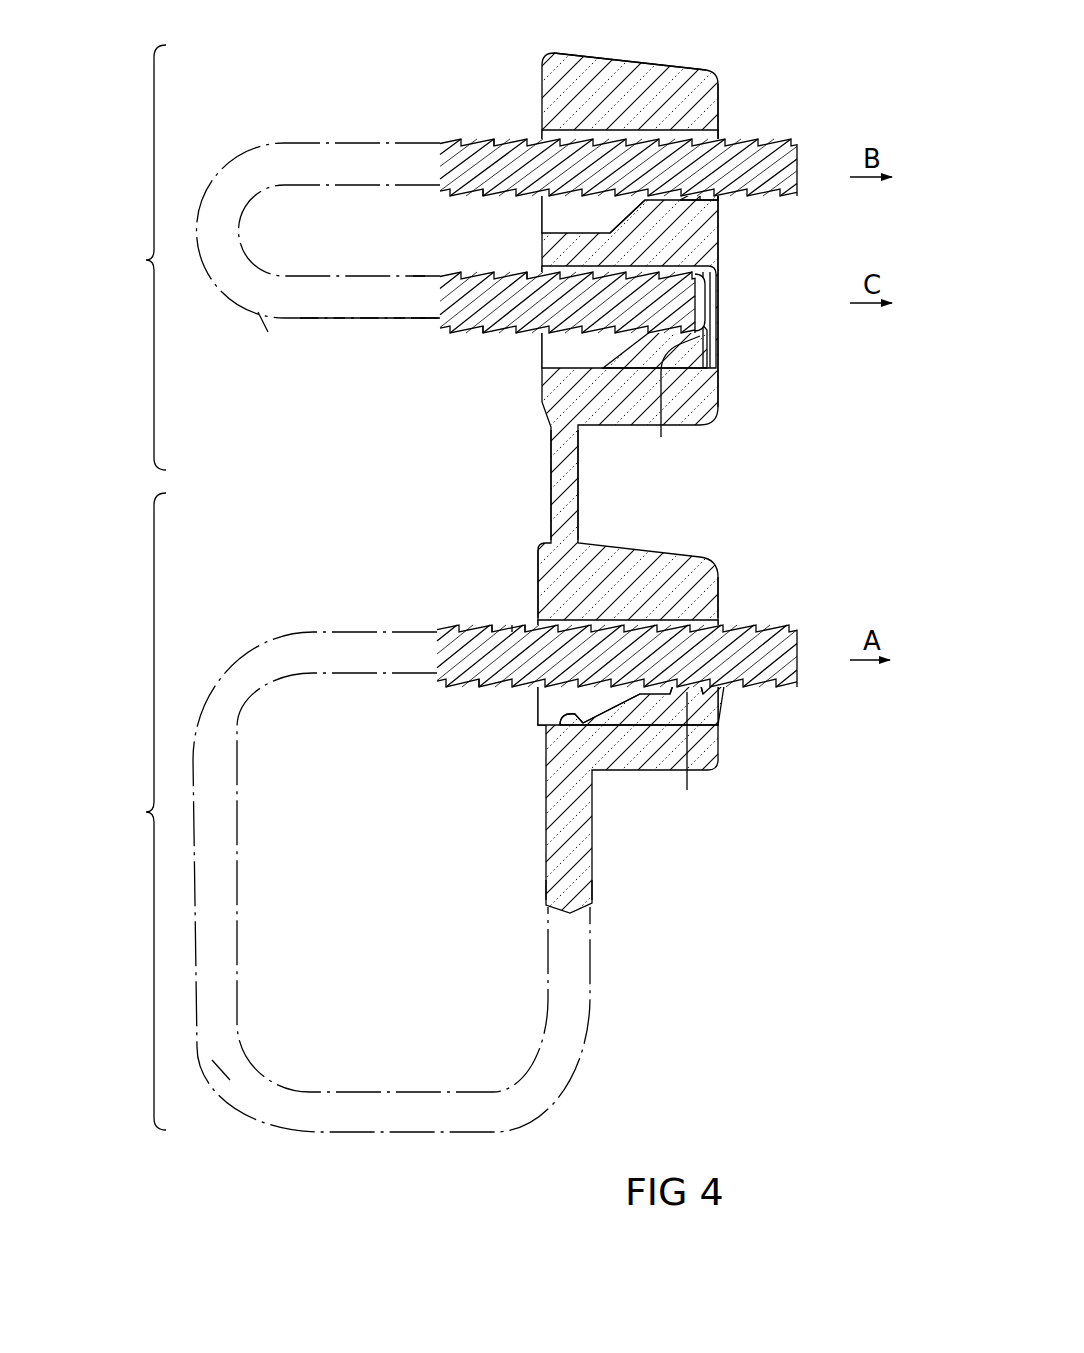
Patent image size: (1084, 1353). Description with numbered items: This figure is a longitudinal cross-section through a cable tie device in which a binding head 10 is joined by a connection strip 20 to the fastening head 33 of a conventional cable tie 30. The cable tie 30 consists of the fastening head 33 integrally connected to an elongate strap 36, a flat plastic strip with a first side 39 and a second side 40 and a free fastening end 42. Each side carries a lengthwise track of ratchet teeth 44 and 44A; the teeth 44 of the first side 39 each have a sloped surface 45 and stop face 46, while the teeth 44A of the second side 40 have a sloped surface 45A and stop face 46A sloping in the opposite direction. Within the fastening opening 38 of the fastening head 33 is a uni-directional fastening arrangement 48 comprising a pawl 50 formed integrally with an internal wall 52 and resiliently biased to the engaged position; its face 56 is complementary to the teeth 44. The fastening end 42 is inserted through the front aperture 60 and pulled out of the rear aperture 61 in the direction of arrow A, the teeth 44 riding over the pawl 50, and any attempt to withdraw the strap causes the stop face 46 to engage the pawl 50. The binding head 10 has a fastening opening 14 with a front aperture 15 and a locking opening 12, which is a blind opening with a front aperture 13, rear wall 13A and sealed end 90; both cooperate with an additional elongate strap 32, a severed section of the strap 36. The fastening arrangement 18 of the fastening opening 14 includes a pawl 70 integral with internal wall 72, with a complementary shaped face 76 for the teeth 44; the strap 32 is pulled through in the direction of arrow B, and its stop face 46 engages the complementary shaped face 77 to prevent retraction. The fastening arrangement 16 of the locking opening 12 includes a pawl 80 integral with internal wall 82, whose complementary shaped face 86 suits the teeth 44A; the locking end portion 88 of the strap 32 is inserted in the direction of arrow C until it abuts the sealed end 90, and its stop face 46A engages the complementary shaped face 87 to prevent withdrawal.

The binding head 10 is at (136, 257).
The locking opening 12 is at (316, 238).
The front aperture 13 is at (556, 362).
The rear wall 13A is at (719, 310).
The fastening opening 14 is at (322, 122).
The front aperture 15 is at (566, 126).
The fastening arrangement 16 is at (404, 385).
The fastening arrangement 18 is at (386, 227).
The connection strip 20 is at (567, 463).
The cable tie 30 is at (136, 811).
The additional elongate strap 32 is at (268, 314).
The fastening head 33 is at (658, 570).
The elongate strap 36 is at (232, 1060).
The fastening opening 38 is at (318, 602).
The first side 39 is at (410, 269).
The second side 40 is at (410, 329).
The fastening end 42 is at (780, 650).
The ratchet teeth 44 is at (530, 197).
The ratchet teeth 44A is at (530, 340).
The sloped surface 45 is at (515, 192).
The sloped surface 45A is at (497, 333).
The stop face 46 is at (507, 203).
The stop face 46A is at (508, 340).
The fastening arrangement 48 is at (687, 788).
The pawl 50 is at (685, 703).
The internal wall 52 is at (562, 722).
The face 56 is at (690, 680).
The front aperture 60 is at (590, 718).
The rear aperture 61 is at (703, 625).
The pawl 70 is at (673, 224).
The internal wall 72 is at (700, 238).
The complementary shaped face 76 is at (705, 188).
The complementary shaped face 77 is at (712, 130).
The pawl 80 is at (661, 437).
The internal wall 82 is at (712, 367).
The complementary shaped face 86 is at (640, 324).
The complementary shaped face 87 is at (705, 333).
The locking end portion 88 is at (700, 298).
The sealed end 90 is at (714, 318).